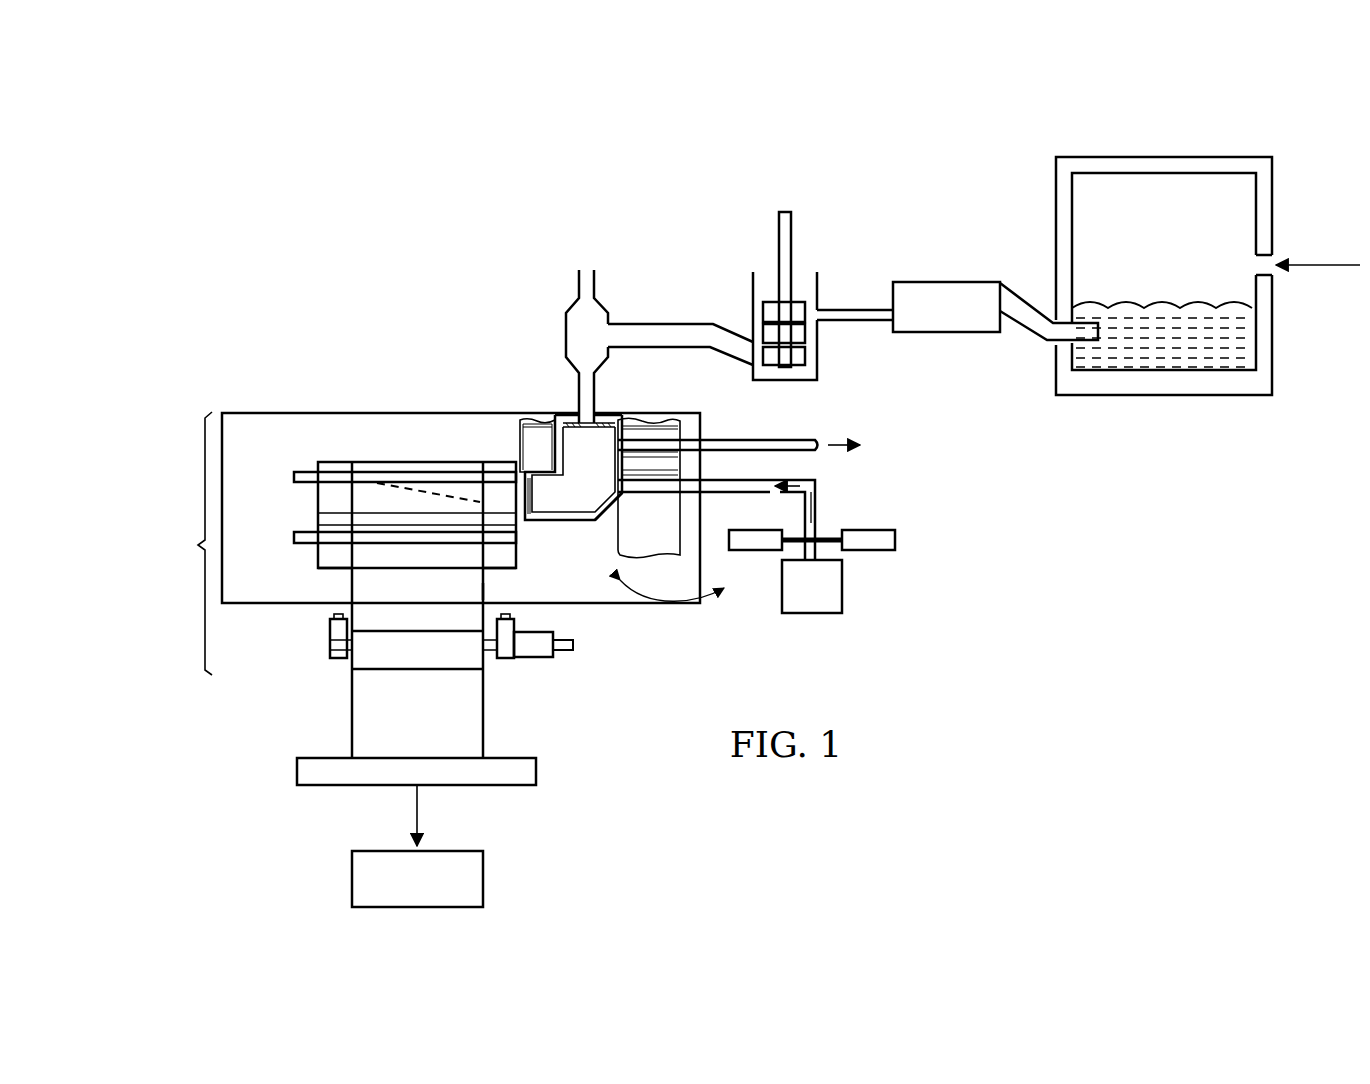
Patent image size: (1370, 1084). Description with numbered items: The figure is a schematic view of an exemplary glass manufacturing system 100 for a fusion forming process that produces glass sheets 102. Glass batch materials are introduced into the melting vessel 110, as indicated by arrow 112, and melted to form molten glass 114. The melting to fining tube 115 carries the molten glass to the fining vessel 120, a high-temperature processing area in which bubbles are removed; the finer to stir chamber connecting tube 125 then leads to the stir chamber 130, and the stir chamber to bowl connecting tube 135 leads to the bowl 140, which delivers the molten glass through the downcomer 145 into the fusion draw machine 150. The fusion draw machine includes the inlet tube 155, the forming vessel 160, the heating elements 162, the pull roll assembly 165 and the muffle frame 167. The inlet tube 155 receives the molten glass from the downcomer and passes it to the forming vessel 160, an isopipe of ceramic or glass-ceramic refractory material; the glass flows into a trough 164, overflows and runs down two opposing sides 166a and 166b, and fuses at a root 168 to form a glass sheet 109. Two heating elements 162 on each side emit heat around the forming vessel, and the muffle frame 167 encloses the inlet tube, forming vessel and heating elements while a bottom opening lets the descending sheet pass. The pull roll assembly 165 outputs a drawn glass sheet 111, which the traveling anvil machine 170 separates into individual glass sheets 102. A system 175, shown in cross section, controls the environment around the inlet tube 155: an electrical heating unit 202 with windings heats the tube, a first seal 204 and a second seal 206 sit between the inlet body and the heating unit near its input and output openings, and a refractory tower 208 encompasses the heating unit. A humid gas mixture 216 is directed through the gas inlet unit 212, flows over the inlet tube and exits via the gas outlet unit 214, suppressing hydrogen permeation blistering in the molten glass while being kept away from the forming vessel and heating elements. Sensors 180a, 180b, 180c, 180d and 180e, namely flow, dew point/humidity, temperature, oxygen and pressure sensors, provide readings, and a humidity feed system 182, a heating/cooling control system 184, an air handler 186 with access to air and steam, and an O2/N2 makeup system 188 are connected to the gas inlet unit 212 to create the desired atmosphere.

The glass manufacturing system 100 is at (450, 167).
The glass sheet 102 is at (352, 880).
The glass sheet 109 is at (483, 583).
The melting vessel 110 is at (1162, 154).
The drawn glass sheet 111 is at (352, 710).
The arrow 112 is at (1320, 265).
The molten glass 114 is at (1180, 304).
The melting to fining tube 115 is at (1025, 300).
The fining vessel 120 is at (945, 333).
The finer to stir chamber connecting tube 125 is at (843, 321).
The stir chamber 130 is at (811, 287).
The stir chamber to bowl connecting tube 135 is at (688, 326).
The bowl 140 is at (577, 303).
The downcomer 145 is at (578, 378).
The fusion draw machine 150 is at (182, 543).
The inlet tube 155 is at (573, 467).
The forming vessel 160 is at (318, 502).
The heating elements 162 is at (305, 473).
The trough 164 is at (428, 492).
The pull roll assembly 165 is at (330, 640).
The opposing side 166a is at (502, 555).
The opposing side 166b is at (317, 528).
The muffle frame 167 is at (285, 412).
The root 168 is at (337, 570).
The traveling anvil machine 170 is at (297, 775).
The system 175 is at (652, 572).
The flow sensor 180a is at (949, 611).
The dew point/humidity sensor 180b is at (949, 611).
The temperature sensor 180c is at (949, 611).
The oxygen sensor 180d is at (949, 611).
The pressure sensor 180e is at (867, 552).
The humidity feed system 182 is at (760, 608).
The heating/cooling control system 184 is at (760, 608).
The air handler 186 is at (760, 608).
The O2/N2 makeup system 188 is at (757, 552).
The electrical heating unit 202 is at (545, 428).
The first seal 204 is at (566, 421).
The second seal 206 is at (530, 500).
The refractory tower 208 is at (676, 418).
The gas inlet unit 212 is at (812, 472).
The gas outlet unit 214 is at (790, 437).
The humid gas mixture 216 is at (832, 445).